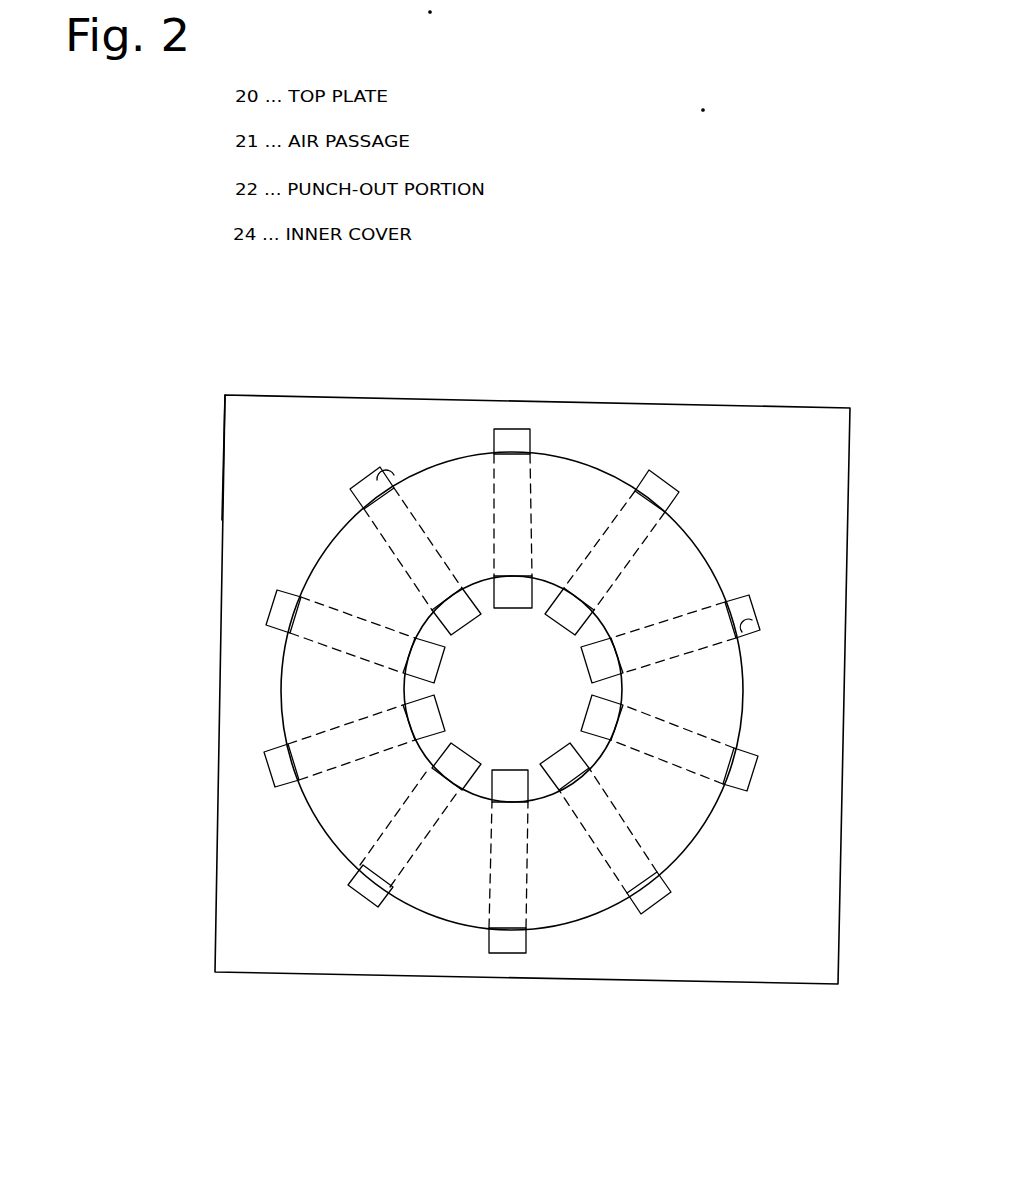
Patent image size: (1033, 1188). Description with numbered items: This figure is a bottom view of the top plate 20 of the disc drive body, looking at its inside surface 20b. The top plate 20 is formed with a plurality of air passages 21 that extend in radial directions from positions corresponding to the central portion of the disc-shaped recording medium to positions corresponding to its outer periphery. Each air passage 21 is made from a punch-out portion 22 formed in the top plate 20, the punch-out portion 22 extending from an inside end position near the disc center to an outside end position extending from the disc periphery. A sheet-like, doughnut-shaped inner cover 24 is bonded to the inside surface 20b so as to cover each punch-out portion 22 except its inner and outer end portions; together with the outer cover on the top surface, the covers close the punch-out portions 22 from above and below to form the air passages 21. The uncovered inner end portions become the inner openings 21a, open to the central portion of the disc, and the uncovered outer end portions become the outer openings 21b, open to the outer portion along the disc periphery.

The top plate 20 is at (750, 453).
The inside surface 20b is at (281, 412).
The air passage 21 is at (532, 512).
The inner opening 21a is at (593, 666).
The outer opening 21b is at (655, 483).
The punch-out portion 22 is at (395, 476).
The inner cover 24 is at (690, 833).